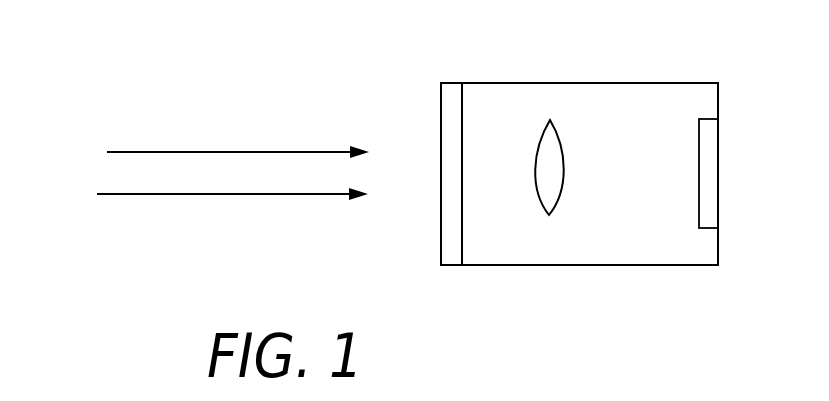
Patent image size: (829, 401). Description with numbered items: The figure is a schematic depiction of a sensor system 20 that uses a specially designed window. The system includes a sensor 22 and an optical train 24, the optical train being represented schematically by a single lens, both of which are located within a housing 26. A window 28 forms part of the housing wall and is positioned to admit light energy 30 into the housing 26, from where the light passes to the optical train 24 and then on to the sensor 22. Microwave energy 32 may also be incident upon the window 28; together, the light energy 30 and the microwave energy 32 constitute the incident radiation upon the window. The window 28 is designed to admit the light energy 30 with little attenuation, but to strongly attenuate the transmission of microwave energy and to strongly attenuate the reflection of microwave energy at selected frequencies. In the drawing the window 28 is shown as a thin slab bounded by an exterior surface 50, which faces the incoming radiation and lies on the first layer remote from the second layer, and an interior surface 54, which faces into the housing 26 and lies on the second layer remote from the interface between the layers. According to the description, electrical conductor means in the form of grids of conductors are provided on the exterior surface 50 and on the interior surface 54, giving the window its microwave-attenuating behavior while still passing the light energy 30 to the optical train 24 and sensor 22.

The sensor system 20 is at (398, 60).
The sensor 22 is at (708, 143).
The optical train 24 is at (550, 120).
The housing 26 is at (563, 265).
The window 28 is at (452, 252).
The light energy 30 is at (298, 152).
The microwave energy 32 is at (110, 194).
The exterior surface 50 is at (441, 230).
The interior surface 54 is at (462, 229).